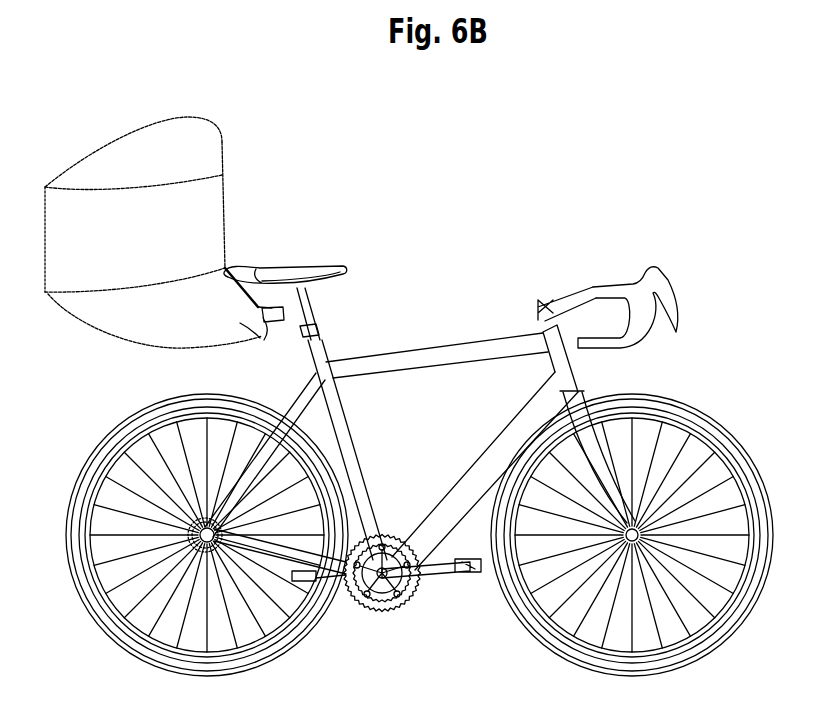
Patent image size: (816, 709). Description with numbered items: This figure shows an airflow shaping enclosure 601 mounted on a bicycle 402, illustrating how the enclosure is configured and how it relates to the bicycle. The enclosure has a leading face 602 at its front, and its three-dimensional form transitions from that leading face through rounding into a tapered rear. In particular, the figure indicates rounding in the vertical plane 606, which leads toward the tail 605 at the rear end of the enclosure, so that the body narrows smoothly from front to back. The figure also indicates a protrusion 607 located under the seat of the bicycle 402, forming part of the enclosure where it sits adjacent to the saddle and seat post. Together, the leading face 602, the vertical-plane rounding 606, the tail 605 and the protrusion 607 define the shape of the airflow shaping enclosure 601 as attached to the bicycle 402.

The bicycle 402 is at (442, 347).
The airflow shaping enclosure 601 is at (148, 222).
The leading face 602 is at (223, 220).
The tail 605 is at (45, 243).
The rounding in the vertical plane 606 is at (222, 138).
The protrusion 607 is at (303, 328).